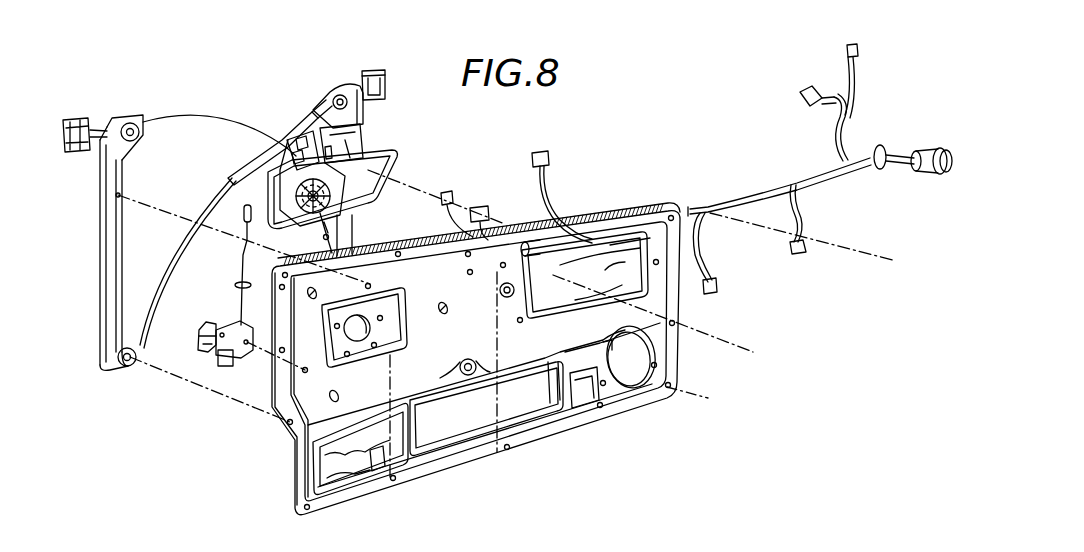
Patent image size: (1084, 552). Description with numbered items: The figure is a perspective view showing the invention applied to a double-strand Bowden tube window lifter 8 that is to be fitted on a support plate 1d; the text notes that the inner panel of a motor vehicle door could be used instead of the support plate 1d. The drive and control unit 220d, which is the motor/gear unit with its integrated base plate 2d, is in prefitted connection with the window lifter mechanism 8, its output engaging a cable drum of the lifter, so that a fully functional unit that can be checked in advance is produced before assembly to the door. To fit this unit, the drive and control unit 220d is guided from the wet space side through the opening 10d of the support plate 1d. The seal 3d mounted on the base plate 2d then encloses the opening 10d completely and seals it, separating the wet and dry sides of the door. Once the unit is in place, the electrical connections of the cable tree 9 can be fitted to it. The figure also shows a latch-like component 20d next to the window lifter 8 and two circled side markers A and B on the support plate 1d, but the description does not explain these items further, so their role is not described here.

The double-strand Bowden tube window lifter 8 is at (146, 111).
The drive and control unit 220d is at (323, 160).
The seal 3d is at (398, 153).
The base plate 2d is at (367, 188).
The door latch assembly 20d is at (305, 222).
The support plate 1d is at (313, 403).
The opening 10d is at (557, 275).
The cable tree 9 is at (731, 205).
The panel side A is at (284, 485).
The panel side B is at (345, 496).